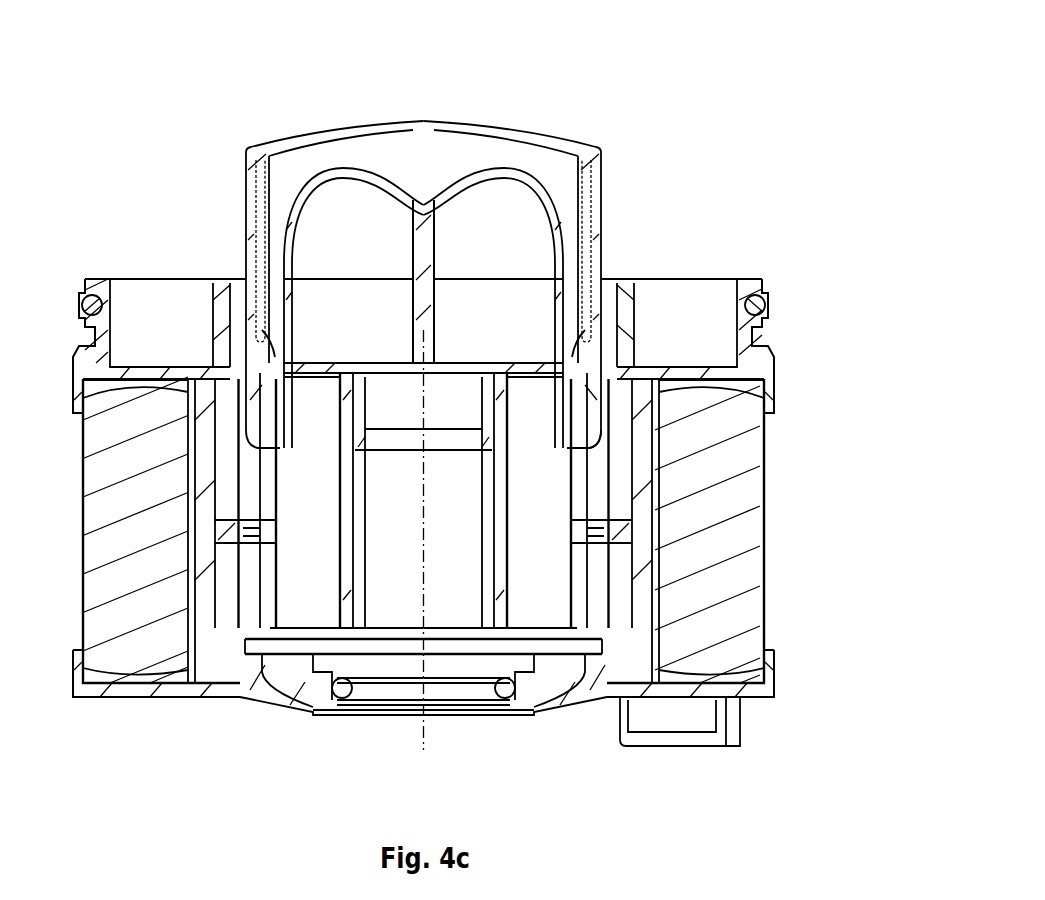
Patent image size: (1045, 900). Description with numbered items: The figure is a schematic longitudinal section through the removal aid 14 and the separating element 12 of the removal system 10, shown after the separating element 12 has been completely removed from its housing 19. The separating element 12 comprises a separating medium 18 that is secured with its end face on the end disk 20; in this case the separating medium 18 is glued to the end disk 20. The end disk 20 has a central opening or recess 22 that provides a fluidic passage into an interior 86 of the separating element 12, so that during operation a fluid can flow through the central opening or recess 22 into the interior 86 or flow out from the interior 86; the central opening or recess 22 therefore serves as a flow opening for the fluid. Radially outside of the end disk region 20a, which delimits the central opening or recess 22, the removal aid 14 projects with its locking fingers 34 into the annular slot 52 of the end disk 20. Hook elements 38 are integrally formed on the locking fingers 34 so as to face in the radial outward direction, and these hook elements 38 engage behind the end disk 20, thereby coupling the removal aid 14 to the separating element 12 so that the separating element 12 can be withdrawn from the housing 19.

The removal system 10 is at (643, 140).
The separating element 12 is at (262, 729).
The removal aid 14 is at (474, 104).
The separating medium 18 is at (153, 630).
The housing 19 is at (683, 360).
The end disk 20 is at (167, 372).
The end disk region 20a is at (350, 356).
The central opening or recess 22 is at (439, 385).
The locking fingers 34 is at (590, 380).
The hook elements 38 is at (262, 362).
The annular slot 52 is at (570, 355).
The interior 86 is at (437, 560).